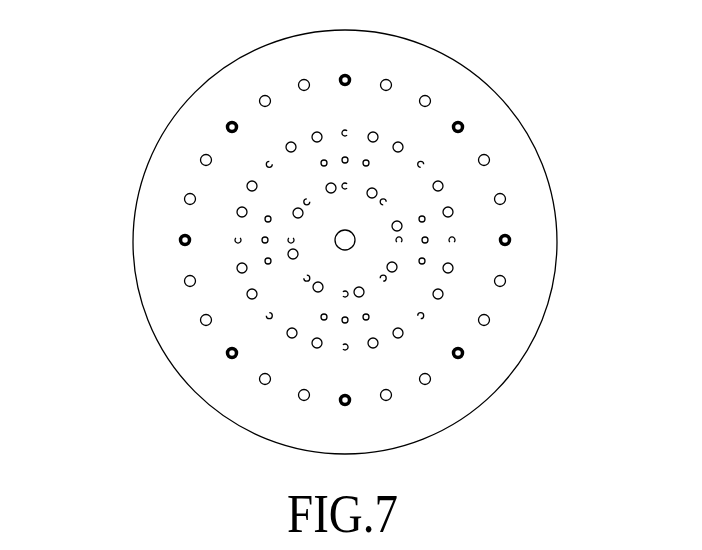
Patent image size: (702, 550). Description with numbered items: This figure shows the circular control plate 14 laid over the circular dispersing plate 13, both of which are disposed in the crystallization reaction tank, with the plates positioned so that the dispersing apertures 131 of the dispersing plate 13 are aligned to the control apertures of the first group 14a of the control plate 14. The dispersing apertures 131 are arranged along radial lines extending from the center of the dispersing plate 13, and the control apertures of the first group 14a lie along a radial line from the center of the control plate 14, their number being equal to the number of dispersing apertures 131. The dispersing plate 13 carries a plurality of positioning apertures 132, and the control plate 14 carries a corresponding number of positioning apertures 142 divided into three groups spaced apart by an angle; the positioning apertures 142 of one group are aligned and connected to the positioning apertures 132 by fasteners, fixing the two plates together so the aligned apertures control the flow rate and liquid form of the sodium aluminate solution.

The control plate 14 is at (148, 155).
The dispersing plate 13 is at (291, 242).
The first group of control apertures 14a is at (346, 79).
The dispersing apertures 131 is at (366, 203).
The positioning apertures 142 is at (322, 162).
The positioning apertures 132 is at (339, 238).